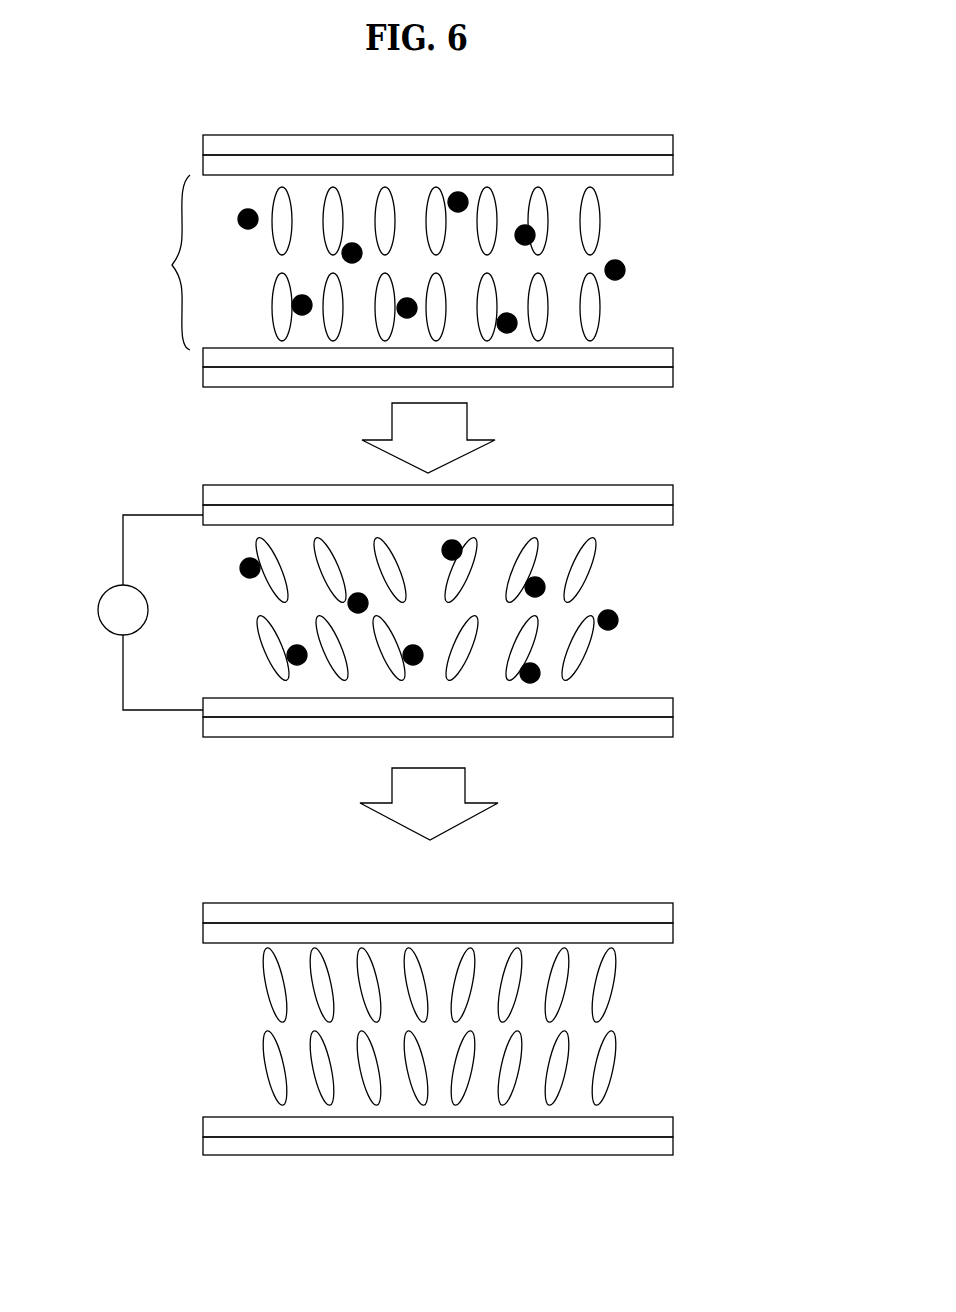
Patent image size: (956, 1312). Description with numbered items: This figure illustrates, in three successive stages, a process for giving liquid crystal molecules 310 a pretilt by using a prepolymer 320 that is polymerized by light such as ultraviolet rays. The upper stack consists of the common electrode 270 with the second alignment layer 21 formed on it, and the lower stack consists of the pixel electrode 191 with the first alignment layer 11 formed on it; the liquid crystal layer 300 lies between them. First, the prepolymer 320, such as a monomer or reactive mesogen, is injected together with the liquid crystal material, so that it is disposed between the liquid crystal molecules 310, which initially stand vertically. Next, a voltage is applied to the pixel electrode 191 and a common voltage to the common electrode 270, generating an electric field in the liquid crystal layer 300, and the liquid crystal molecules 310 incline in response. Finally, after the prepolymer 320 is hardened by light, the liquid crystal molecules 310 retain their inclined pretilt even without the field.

The common electrode 270 is at (203, 146).
The second alignment layer 21 is at (673, 158).
The liquid crystal layer 300 is at (157, 262).
The liquid crystal molecules 310 is at (600, 217).
The prepolymer 320 is at (625, 270).
The first alignment layer 11 is at (673, 352).
The pixel electrode 191 is at (201, 376).